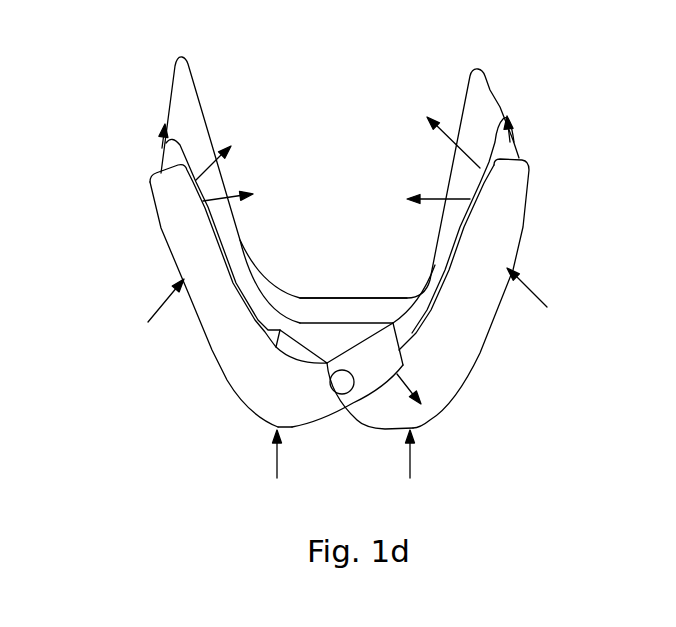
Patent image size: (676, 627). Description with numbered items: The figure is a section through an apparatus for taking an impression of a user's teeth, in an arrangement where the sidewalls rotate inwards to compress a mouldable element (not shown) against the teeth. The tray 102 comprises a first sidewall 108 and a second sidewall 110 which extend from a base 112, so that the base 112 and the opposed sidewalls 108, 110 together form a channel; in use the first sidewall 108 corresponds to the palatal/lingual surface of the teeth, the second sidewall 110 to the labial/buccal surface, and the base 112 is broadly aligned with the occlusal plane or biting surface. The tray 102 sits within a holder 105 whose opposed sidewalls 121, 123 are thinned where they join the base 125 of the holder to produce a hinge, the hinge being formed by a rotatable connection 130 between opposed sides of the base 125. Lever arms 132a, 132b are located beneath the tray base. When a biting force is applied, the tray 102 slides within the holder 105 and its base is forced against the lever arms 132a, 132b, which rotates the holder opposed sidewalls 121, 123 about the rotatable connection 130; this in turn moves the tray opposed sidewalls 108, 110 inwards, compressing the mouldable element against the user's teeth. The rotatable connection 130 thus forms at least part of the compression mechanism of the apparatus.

The tray 102 is at (225, 121).
The holder 105 is at (497, 397).
The first sidewall 108 is at (497, 137).
The second sidewall 110 is at (183, 115).
The base 112 is at (348, 298).
The holder opposed sidewall 121 is at (492, 316).
The holder opposed sidewall 123 is at (188, 268).
The base of the holder 125 is at (245, 427).
The rotatable connection 130 is at (343, 395).
The lever arm 132a is at (298, 347).
The lever arm 132b is at (393, 323).